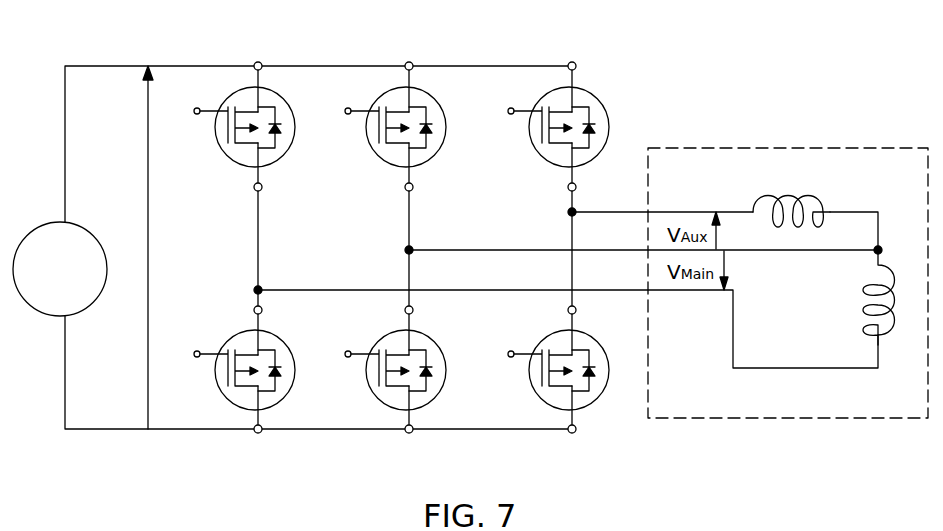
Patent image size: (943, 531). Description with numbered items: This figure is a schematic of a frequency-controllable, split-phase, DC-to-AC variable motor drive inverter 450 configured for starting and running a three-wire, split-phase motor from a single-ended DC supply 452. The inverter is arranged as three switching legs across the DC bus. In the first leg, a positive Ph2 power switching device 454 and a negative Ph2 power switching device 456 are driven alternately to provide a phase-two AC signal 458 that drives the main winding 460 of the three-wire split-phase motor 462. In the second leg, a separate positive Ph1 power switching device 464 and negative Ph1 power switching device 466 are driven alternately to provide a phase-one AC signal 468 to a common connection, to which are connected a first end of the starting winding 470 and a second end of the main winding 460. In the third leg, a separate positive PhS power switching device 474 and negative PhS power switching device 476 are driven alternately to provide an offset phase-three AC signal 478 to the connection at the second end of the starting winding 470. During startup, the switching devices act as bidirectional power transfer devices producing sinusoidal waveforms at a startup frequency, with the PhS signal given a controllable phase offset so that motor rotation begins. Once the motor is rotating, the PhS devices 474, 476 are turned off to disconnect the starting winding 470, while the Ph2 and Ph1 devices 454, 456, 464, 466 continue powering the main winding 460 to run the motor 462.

The frequency-controllable, split-phase, DC-to-AC variable motor drive inverter 450 is at (846, 73).
The single-ended DC supply 452 is at (78, 312).
The positive Ph2 power switching device 454 is at (275, 98).
The negative Ph2 power switching device 456 is at (277, 410).
The phase 2 (Ph2) AC signal 458 is at (285, 290).
The main winding 460 is at (865, 328).
The 3-wire split-phase motor 462 is at (688, 168).
The positive Ph1 power switching device 464 is at (424, 97).
The negative Ph1 power switching device 466 is at (425, 395).
The phase 1 (Ph1) AC signal 468 is at (440, 248).
The starting winding 470 is at (815, 208).
The positive PhS power switching device 474 is at (593, 115).
The negative PhS power switching device 476 is at (593, 397).
The offset phase 3 (PhS) AC signal 478 is at (598, 210).